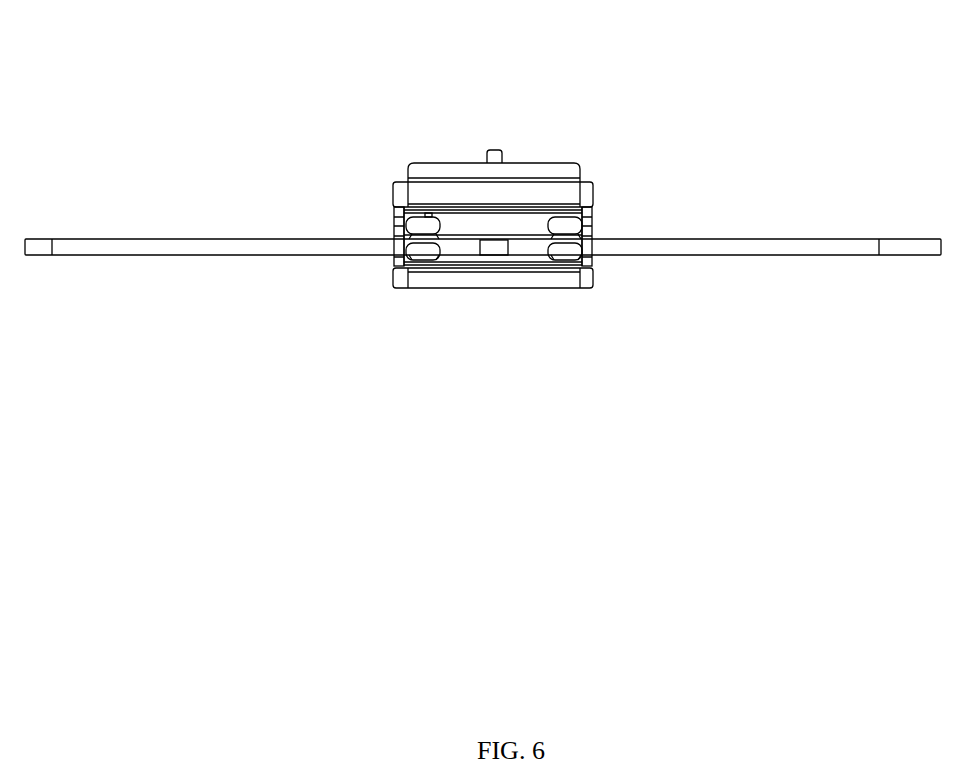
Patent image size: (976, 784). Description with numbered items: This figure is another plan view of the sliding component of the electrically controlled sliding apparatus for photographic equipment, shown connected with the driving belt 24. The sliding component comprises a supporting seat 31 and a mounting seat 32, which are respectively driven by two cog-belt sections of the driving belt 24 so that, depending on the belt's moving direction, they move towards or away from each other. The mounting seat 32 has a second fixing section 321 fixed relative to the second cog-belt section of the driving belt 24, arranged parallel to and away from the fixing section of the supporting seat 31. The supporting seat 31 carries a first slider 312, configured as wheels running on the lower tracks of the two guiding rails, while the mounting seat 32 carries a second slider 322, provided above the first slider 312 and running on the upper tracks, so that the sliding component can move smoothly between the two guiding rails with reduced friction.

The driving belt 24 is at (145, 240).
The supporting seat 31 is at (373, 313).
The mounting seat 32 is at (532, 127).
The second slider 322 is at (572, 214).
The first slider 312 is at (581, 263).
The second fixing section 321 is at (495, 247).